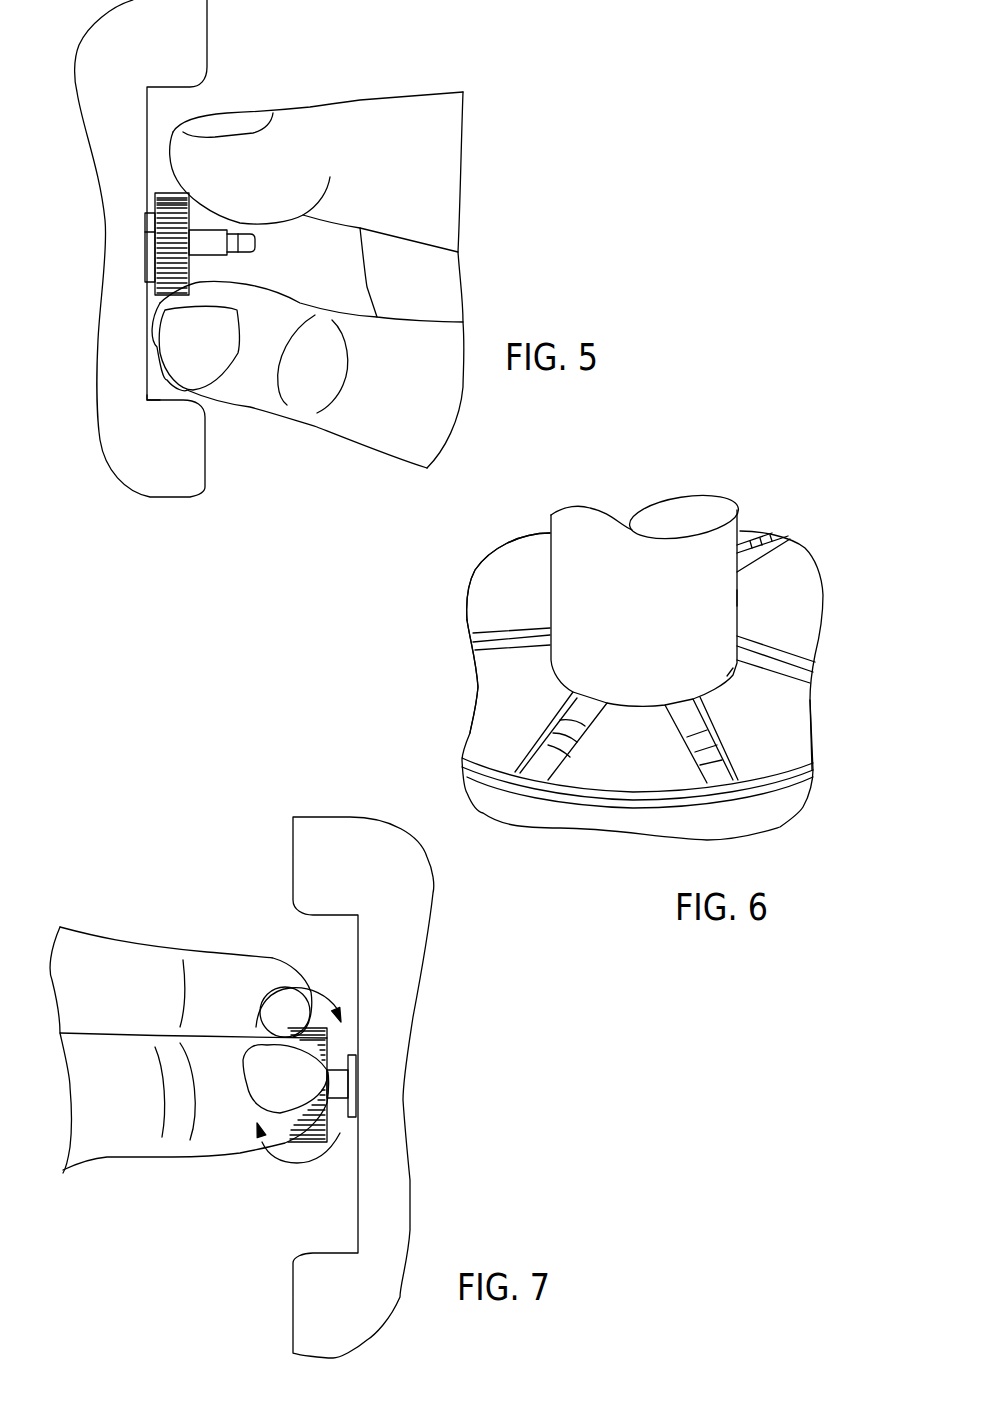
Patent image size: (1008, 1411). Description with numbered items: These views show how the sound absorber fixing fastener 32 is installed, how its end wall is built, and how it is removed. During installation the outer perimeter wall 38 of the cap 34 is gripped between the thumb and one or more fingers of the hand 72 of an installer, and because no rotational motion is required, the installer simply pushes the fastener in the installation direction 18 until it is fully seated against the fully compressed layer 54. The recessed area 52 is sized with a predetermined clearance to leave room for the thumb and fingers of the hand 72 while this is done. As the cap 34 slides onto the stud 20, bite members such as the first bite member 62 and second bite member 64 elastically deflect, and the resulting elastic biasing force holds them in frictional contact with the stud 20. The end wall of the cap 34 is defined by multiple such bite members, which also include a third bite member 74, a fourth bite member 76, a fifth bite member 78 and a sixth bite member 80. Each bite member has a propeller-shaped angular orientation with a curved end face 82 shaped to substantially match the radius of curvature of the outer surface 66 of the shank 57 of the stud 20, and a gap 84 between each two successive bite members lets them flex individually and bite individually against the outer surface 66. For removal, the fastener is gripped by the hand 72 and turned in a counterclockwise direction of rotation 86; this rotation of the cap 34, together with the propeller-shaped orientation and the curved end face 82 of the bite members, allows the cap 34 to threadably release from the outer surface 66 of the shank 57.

In FIG. 5, the installation direction 18 is at (490, 263).
In FIG. 5, the stud 20 is at (216, 246).
In FIG. 6, the stud 20 is at (590, 571).
In FIG. 7, the stud 20 is at (340, 1085).
In FIG. 5, the sound absorber fixing fastener 32 is at (493, 102).
In FIG. 5, the cap 34 is at (153, 210).
In FIG. 6, the cap 34 is at (770, 818).
In FIG. 7, the cap 34 is at (325, 1043).
In FIG. 5, the outer perimeter wall 38 is at (147, 275).
In FIG. 5, the recessed area 52 is at (200, 70).
In FIG. 5, the fully compressed layer 54 is at (147, 383).
In FIG. 6, the shank 57 is at (675, 560).
In FIG. 6, the first bite member 62 is at (490, 593).
In FIG. 6, the second bite member 64 is at (773, 723).
In FIG. 6, the outer surface 66 is at (737, 598).
In FIG. 5, the hand 72 is at (305, 140).
In FIG. 7, the hand 72 is at (230, 977).
In FIG. 6, the third bite member 74 is at (500, 702).
In FIG. 6, the fourth bite member 76 is at (607, 773).
In FIG. 6, the fifth bite member 78 is at (788, 618).
In FIG. 6, the sixth bite member 80 is at (753, 538).
In FIG. 6, the curved end face 82 is at (728, 677).
In FIG. 6, the gap 84 is at (490, 640).
In FIG. 7, the counterclockwise direction of rotation 86 is at (283, 985).